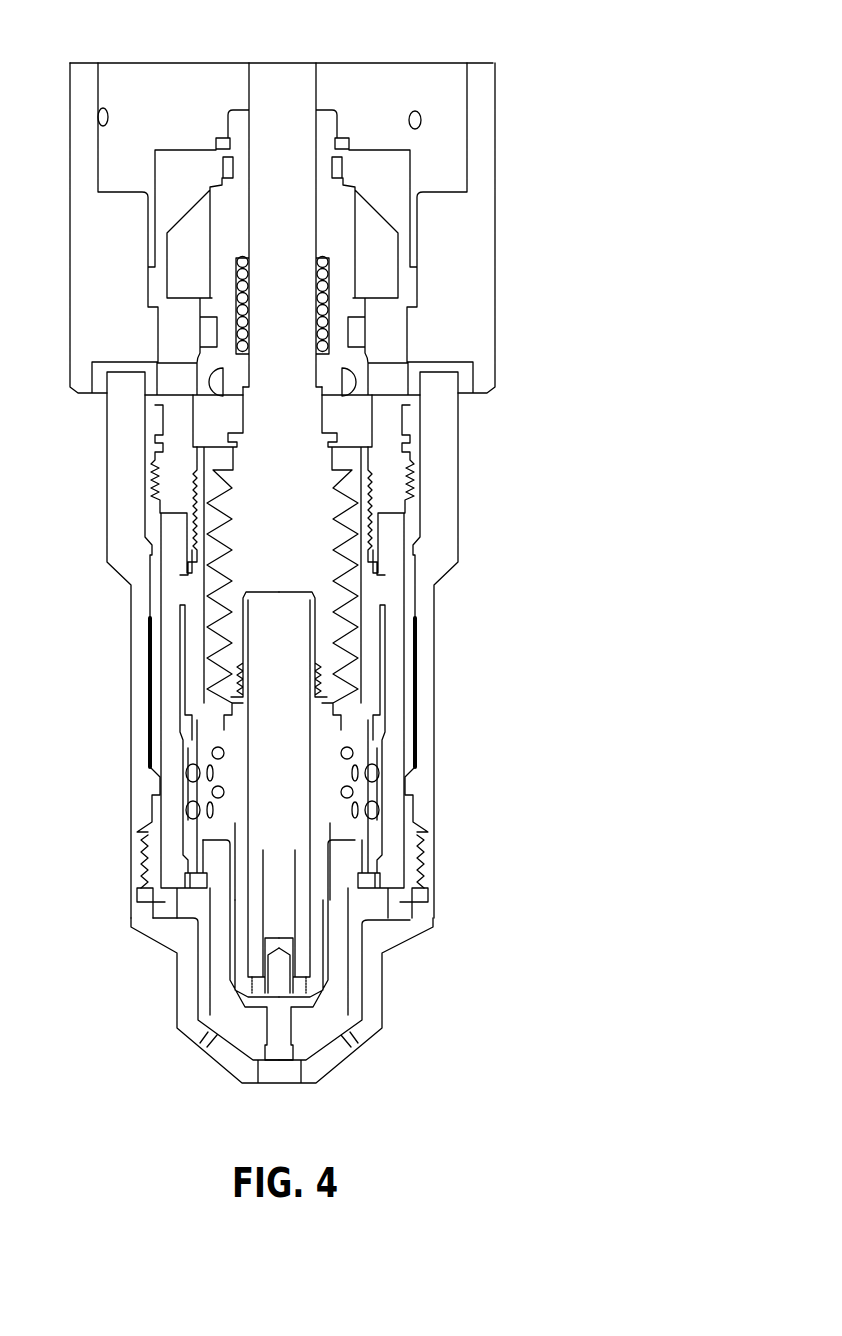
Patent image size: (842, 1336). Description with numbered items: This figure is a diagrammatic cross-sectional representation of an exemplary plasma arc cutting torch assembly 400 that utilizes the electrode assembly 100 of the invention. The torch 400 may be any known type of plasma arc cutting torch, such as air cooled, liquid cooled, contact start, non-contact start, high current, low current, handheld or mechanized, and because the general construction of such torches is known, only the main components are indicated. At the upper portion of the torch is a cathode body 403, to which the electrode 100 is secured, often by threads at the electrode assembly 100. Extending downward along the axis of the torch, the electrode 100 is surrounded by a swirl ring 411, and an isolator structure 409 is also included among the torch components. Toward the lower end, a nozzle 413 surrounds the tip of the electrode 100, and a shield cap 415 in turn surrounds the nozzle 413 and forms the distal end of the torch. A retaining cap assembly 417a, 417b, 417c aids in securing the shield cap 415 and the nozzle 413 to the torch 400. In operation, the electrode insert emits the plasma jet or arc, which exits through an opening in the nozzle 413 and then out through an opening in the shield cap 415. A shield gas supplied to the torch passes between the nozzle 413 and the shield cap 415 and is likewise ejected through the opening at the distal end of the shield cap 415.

The torch assembly 400 is at (594, 116).
The cathode body 403 is at (283, 425).
The retaining cap assembly 417a is at (437, 487).
The isolator structure 409 is at (197, 677).
The swirl ring 411 is at (367, 752).
The retaining cap assembly 417b is at (157, 767).
The electrode assembly 100 is at (280, 850).
The retaining cap assembly 417c is at (163, 903).
The nozzle 413 is at (338, 978).
The shield cap 415 is at (378, 1024).